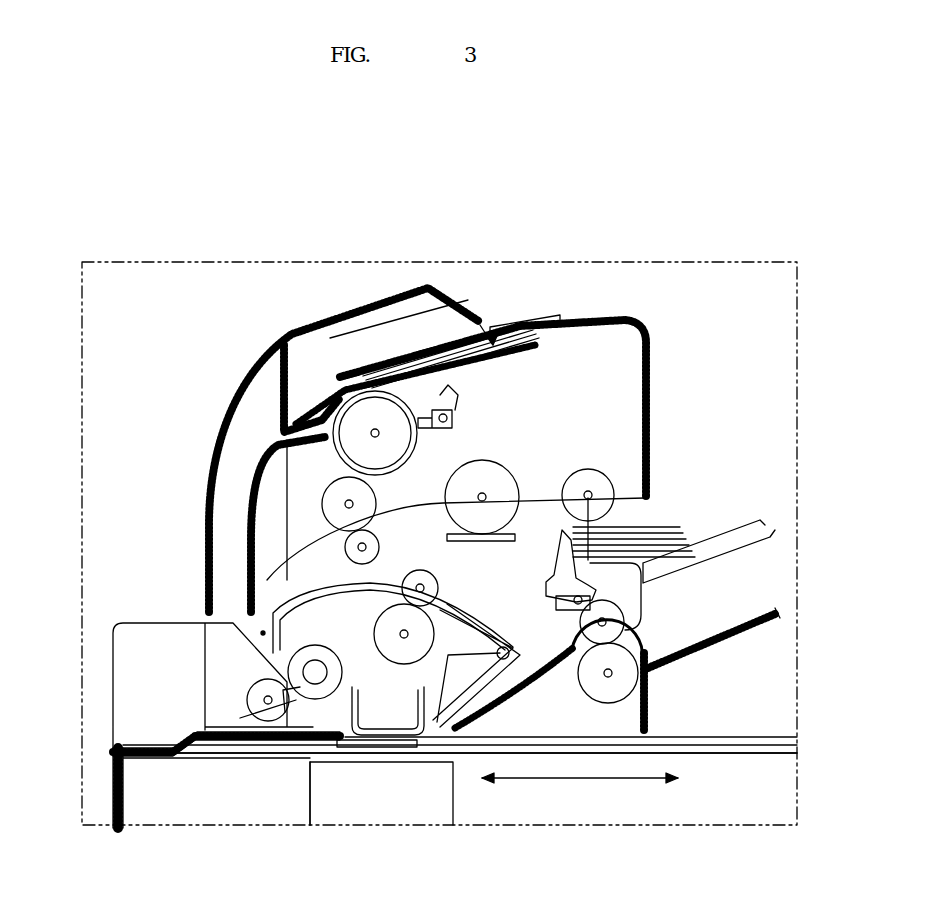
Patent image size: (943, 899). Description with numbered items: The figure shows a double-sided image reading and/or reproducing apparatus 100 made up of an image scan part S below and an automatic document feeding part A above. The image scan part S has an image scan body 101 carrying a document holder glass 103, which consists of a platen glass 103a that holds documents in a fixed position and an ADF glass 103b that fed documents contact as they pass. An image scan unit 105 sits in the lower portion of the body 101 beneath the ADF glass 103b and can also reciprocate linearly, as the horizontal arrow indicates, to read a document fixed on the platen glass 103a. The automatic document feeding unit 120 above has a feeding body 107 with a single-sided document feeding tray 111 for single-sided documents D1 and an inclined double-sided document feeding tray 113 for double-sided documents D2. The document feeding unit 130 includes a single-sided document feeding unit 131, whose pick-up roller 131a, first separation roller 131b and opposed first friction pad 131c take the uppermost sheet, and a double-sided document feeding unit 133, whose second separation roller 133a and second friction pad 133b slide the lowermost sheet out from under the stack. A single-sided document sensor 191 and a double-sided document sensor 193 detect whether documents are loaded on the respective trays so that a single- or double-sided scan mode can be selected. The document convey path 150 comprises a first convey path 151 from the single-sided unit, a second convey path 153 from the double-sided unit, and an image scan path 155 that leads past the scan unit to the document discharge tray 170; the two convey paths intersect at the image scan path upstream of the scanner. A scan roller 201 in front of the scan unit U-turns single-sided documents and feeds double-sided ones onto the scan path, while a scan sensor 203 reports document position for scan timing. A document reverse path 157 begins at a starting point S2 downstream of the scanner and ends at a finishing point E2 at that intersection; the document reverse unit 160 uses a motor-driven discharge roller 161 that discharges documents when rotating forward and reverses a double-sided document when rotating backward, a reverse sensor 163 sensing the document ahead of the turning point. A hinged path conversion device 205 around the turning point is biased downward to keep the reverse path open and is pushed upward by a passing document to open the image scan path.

The double-sided image reading and/or reproducing apparatus 100 is at (745, 210).
The image scan body 101 is at (112, 828).
The document holder glass 103 is at (706, 750).
The platen glass 103a is at (758, 756).
The automatic document feeder (ADF) glass 103b is at (395, 762).
The image scan unit 105 is at (306, 800).
The feeding body 107 is at (632, 322).
The double-sided document feeding tray 113 is at (553, 325).
The single-sided document feeding tray 111 is at (730, 550).
The automatic document feeding unit 120 is at (325, 397).
The document feeding unit 130 is at (487, 320).
The single-sided document feeding unit 131 is at (728, 405).
The pick-up roller 131a is at (590, 468).
The first separation roller 131b is at (493, 458).
The first friction pad 131c is at (540, 508).
The double-sided document feeding unit 133 is at (362, 213).
The second separation roller 133a is at (352, 372).
The second friction pad 133b is at (315, 325).
The document convey path 150 is at (125, 615).
The first convey path 151 is at (315, 550).
The second convey path 153 is at (253, 500).
The image scan path 155 is at (305, 733).
The document reverse path 157 is at (303, 577).
The document reverse unit 160 is at (590, 812).
The discharge roller 161 is at (585, 705).
The reverse sensor 163 is at (510, 700).
The document discharge tray 170 is at (720, 640).
The single-sided document sensor 191 is at (590, 520).
The double-sided document sensor 193 is at (450, 390).
The scan roller 201 is at (250, 735).
The scan sensor 203 is at (375, 748).
The path conversion device 205 is at (478, 620).
The automatic document feeding part A is at (70, 778).
The image scan part S is at (72, 748).
The single-sided document D1 is at (660, 520).
The double-sided document D2 is at (500, 325).
The finishing point of the document reverse path E2 is at (263, 633).
The starting point (turning point) of the document reverse path S2 is at (503, 648).